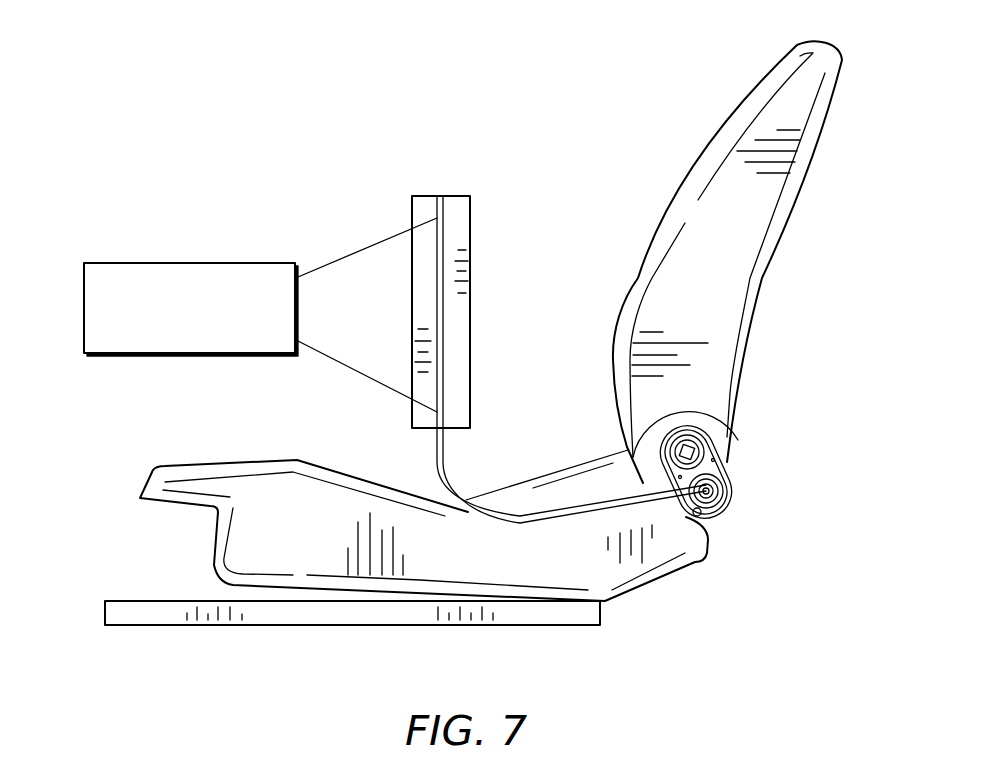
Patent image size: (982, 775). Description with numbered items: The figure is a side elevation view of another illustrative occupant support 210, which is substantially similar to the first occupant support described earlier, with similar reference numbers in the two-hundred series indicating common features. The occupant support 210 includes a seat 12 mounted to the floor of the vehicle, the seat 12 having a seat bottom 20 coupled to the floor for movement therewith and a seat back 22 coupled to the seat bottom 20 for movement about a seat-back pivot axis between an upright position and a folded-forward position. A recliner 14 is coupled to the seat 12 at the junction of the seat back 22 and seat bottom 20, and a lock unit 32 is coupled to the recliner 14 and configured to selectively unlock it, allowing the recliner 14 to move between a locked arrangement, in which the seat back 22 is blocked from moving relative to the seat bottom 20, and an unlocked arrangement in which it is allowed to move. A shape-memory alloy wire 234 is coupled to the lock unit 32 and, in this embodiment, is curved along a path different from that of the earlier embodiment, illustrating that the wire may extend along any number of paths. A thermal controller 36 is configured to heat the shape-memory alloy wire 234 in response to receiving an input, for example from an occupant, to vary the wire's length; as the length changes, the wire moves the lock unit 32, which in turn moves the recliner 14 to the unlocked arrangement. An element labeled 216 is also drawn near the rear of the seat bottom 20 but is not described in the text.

The occupant support 210 is at (141, 164).
The seat 12 is at (715, 118).
The seat back 22 is at (663, 228).
The recliner 14 is at (703, 425).
The lock unit 32 is at (732, 451).
The seat bottom 20 is at (198, 460).
The seat cushion side 216 is at (667, 526).
The shape-memory alloy wire 234 is at (556, 508).
The thermal controller 36 is at (139, 263).